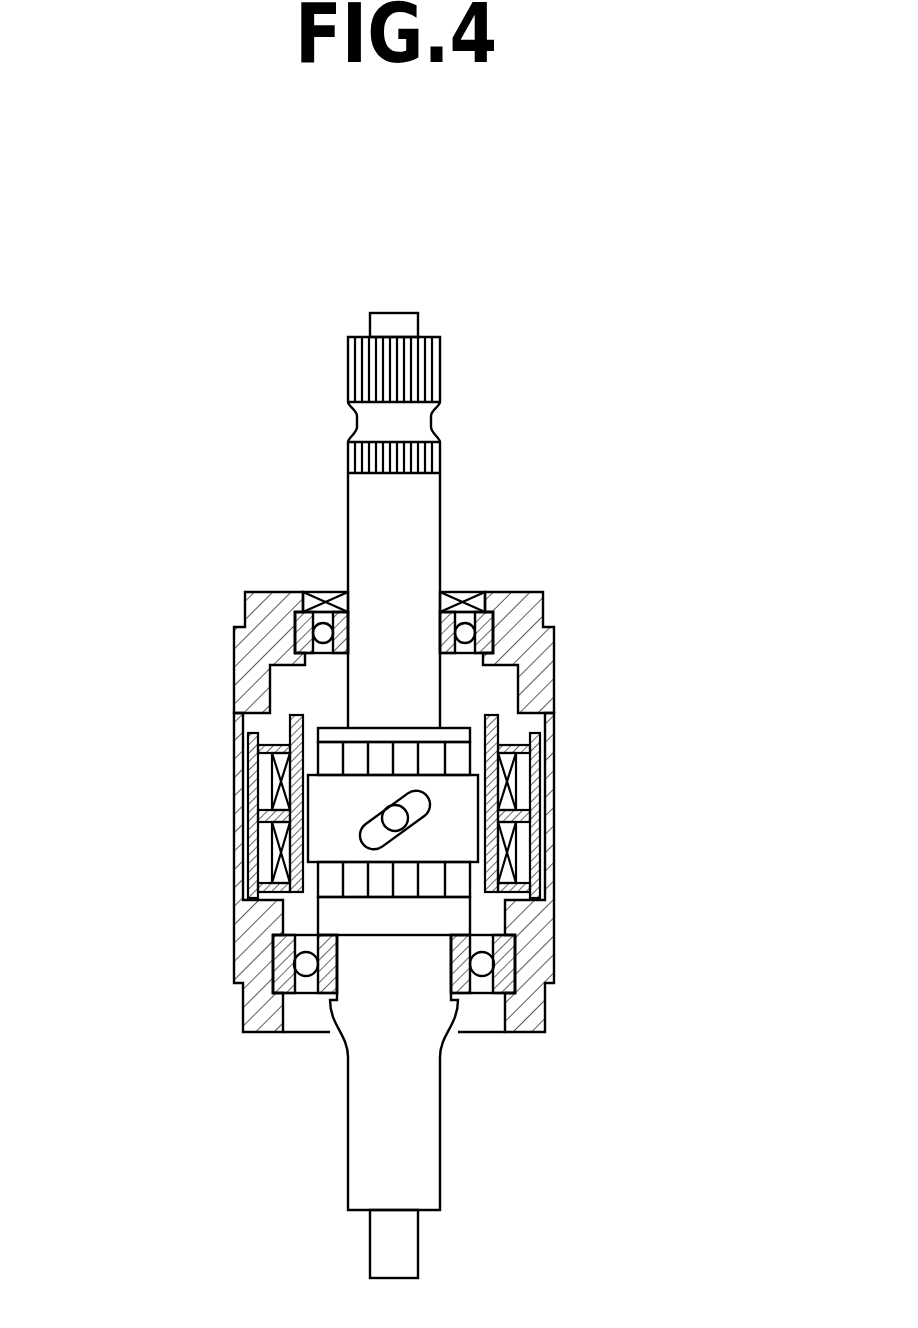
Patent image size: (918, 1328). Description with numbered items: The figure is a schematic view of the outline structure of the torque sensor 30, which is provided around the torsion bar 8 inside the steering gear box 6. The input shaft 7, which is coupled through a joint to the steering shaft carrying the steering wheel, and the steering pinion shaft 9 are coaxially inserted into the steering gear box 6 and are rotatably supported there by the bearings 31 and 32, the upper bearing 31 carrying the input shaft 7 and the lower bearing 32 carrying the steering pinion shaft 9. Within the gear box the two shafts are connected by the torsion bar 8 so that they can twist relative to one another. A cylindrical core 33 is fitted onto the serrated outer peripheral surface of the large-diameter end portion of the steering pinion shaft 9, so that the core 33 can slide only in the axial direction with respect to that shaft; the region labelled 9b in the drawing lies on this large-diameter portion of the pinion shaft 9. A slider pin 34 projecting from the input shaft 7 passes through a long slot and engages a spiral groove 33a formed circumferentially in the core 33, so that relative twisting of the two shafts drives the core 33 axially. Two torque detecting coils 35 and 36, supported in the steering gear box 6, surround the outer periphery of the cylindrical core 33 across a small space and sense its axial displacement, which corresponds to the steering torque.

The steering gear box 6 is at (585, 597).
The input shaft 7 is at (425, 516).
The torsion bar 8 is at (410, 323).
The steering pinion shaft 9 is at (427, 1163).
The rotor core laminations / shaft portion 9b is at (435, 755).
The torque sensor 30 is at (178, 866).
The bearing 31 is at (310, 595).
The bearing 32 is at (307, 990).
The cylindrical core 33 is at (377, 822).
The spiral groove 33a is at (347, 847).
The slider pin 34 is at (395, 818).
The torque detecting coil 35 is at (520, 790).
The torque detecting coil 36 is at (520, 850).